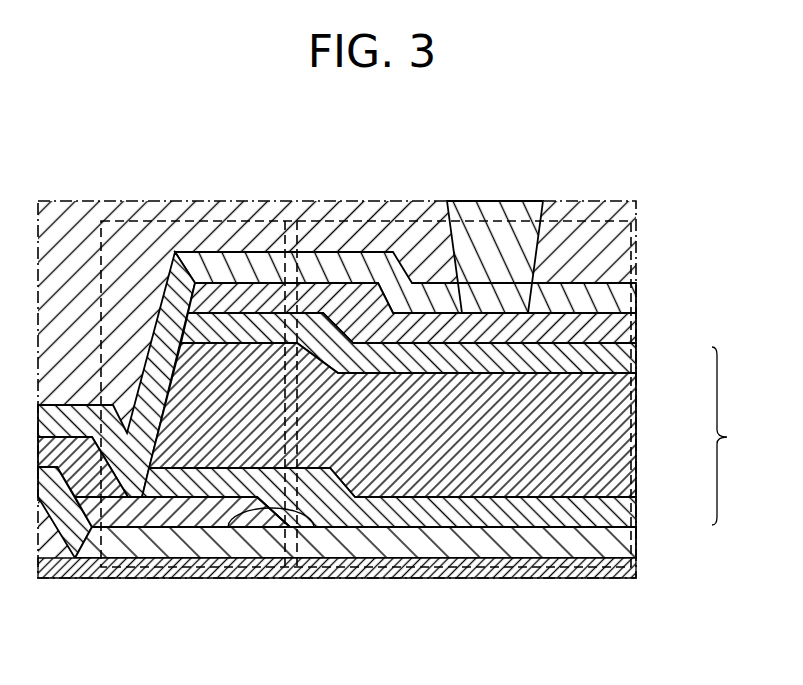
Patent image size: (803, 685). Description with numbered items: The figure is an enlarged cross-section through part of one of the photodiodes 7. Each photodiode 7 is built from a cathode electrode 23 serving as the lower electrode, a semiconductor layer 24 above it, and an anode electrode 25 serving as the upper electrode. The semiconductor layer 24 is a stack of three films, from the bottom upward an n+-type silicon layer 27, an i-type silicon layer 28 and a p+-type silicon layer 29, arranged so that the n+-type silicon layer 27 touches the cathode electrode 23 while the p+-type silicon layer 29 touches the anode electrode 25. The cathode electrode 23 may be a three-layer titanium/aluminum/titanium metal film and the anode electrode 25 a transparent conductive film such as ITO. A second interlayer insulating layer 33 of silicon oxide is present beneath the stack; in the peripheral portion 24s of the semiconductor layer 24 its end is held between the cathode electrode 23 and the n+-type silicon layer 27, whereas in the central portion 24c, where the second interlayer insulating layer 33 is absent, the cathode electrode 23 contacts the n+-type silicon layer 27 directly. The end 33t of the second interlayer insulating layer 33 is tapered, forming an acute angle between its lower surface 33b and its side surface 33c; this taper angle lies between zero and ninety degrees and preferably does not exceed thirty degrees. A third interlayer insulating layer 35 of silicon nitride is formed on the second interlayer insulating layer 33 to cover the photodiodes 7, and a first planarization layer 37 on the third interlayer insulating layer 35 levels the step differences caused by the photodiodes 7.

The photodiode 7 is at (597, 188).
The cathode electrode 23 is at (210, 545).
The semiconductor layer 24 is at (737, 436).
The peripheral portion of the semiconductor layer 24s is at (268, 578).
The central portion of the semiconductor layer 24c is at (470, 570).
The anode electrode 25 is at (325, 285).
The n+-type silicon layer 27 is at (627, 507).
The i-type silicon layer 28 is at (627, 430).
The p+-type silicon layer 29 is at (627, 355).
The second interlayer insulating layer 33 is at (122, 512).
The end of the second interlayer insulating layer 33t is at (258, 490).
The lower surface of the second interlayer insulating layer 33b is at (150, 529).
The side surface of the second interlayer insulating layer 33c is at (292, 515).
The third interlayer insulating layer 35 is at (383, 252).
The first planarization layer 37 is at (82, 240).